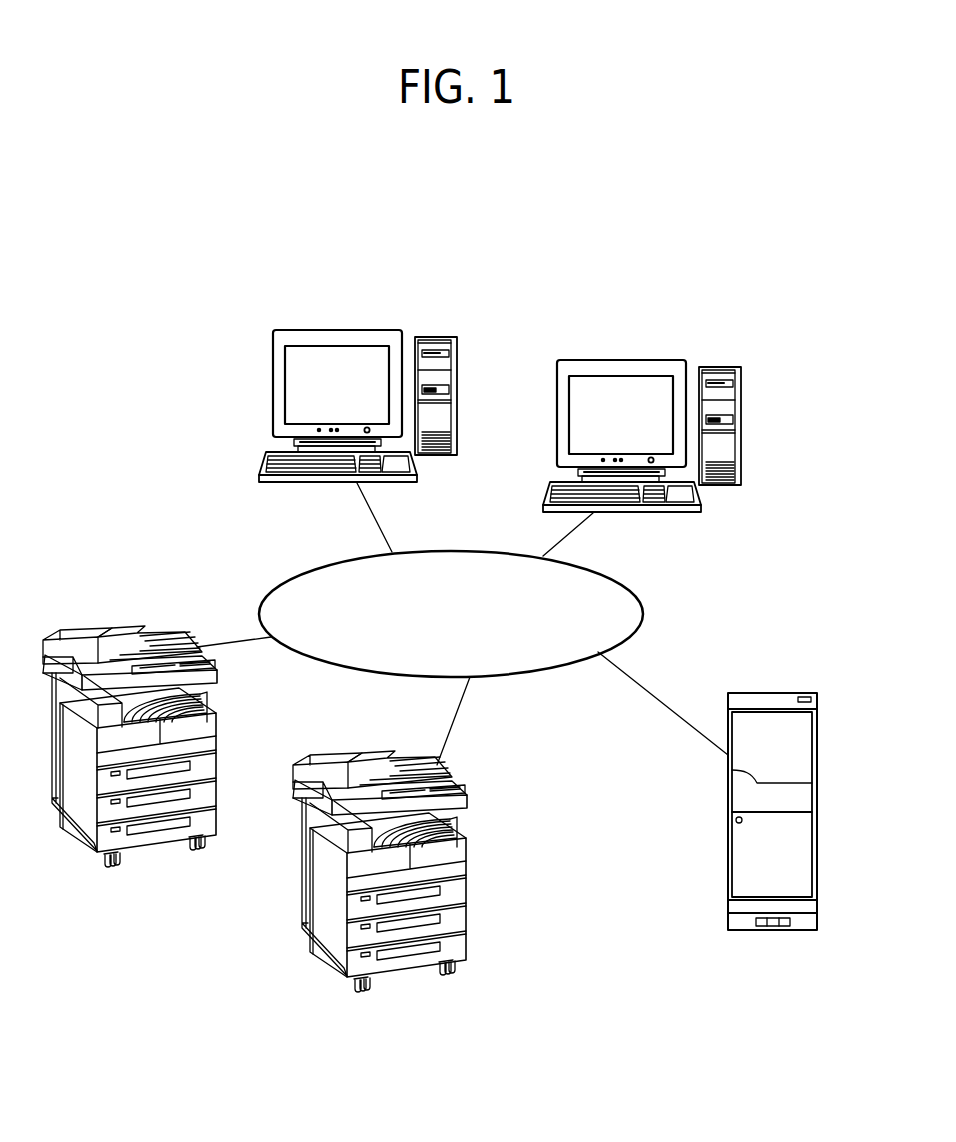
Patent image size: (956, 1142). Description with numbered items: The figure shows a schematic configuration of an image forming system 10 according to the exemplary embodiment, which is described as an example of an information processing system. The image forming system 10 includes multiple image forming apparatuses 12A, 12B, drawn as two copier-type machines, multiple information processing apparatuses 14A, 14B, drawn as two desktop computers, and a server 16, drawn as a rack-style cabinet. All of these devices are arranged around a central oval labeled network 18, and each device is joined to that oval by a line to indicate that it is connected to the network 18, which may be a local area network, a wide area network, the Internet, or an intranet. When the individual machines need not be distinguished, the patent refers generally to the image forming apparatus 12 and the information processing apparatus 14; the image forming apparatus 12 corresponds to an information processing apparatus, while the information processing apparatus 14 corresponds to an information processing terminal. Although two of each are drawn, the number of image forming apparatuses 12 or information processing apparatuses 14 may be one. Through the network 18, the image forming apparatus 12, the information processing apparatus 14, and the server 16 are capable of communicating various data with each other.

The image forming system 10 is at (572, 257).
The image forming apparatus 12 is at (255, 766).
The image forming apparatus 12A is at (120, 632).
The image forming apparatus 12B is at (315, 762).
The information processing apparatus 14 is at (500, 380).
The information processing apparatus 14A is at (337, 337).
The information processing apparatus 14B is at (655, 367).
The server 16 is at (780, 703).
The network 18 is at (641, 598).